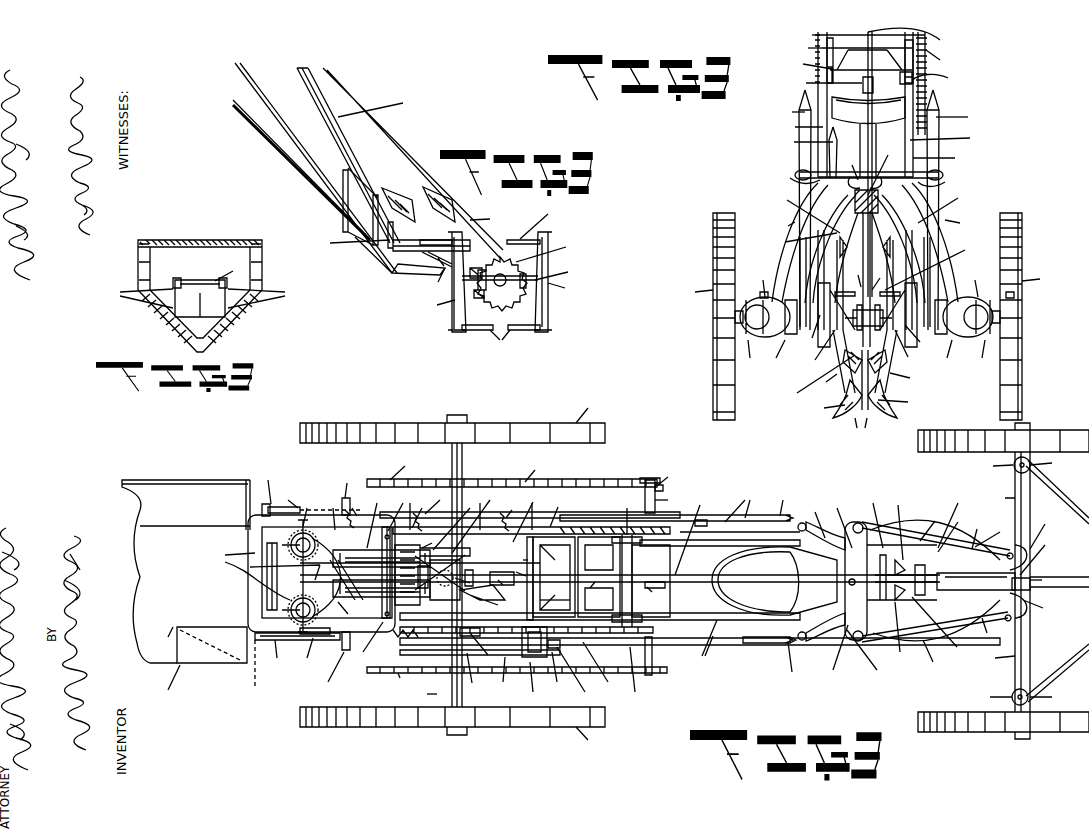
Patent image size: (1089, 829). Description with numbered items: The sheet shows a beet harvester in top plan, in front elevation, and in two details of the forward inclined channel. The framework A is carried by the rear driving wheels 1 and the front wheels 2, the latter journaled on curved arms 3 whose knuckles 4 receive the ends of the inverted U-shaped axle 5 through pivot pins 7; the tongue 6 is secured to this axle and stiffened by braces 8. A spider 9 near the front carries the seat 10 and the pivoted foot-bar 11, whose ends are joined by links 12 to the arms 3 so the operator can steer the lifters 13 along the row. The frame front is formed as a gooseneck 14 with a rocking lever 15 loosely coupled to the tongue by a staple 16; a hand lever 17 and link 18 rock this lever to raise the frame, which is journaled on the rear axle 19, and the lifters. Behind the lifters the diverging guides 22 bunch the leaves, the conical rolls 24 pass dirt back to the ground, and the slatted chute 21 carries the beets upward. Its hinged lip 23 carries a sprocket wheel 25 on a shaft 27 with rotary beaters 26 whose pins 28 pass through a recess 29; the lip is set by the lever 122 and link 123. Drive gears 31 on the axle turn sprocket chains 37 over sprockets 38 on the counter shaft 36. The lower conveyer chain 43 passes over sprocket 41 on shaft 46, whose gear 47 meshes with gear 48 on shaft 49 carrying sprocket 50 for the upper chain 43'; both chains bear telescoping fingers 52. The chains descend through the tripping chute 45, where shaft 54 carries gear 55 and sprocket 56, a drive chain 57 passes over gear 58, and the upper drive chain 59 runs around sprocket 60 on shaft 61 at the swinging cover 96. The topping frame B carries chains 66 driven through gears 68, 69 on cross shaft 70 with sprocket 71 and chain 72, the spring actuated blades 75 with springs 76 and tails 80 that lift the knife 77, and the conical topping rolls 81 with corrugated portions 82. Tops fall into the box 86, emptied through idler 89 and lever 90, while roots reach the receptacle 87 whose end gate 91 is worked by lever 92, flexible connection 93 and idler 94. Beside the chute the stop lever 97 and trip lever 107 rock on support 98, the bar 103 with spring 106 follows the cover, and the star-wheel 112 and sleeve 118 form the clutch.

In FIG. 2, the rear driving wheels 1 is at (452, 574).
In FIG. 3, the front wheels 2 is at (866, 316).
In FIG. 3, the curved arms 3 is at (874, 242).
In FIG. 2, the curved arms 3 is at (1006, 582).
In FIG. 3, the knuckle 4 is at (867, 335).
In FIG. 2, the knuckle 4 is at (1004, 581).
In FIG. 3, the inverted U-shaped axle 5 is at (889, 245).
In FIG. 2, the inverted U-shaped axle 5 is at (1059, 579).
In FIG. 3, the tongue 6 is at (875, 177).
In FIG. 3, the pivot pins 7 is at (886, 281).
In FIG. 2, the pivot pins 7 is at (1057, 579).
In FIG. 3, the braces 8 is at (866, 333).
In FIG. 3, the spider 9 is at (834, 246).
In FIG. 2, the spider 9 is at (821, 524).
In FIG. 3, the seat 10 is at (868, 137).
In FIG. 2, the seat 10 is at (774, 581).
In FIG. 3, the foot-bar 11 is at (861, 168).
In FIG. 2, the foot-bar 11 is at (848, 568).
In FIG. 3, the links 12 is at (868, 178).
In FIG. 2, the links 12 is at (937, 581).
In FIG. 3, the lifters 13 is at (860, 398).
In FIG. 2, the gooseneck 14 is at (991, 533).
In FIG. 2, the rocking lever 15 is at (976, 581).
In FIG. 2, the staple 16 is at (1036, 562).
In FIG. 3, the hand lever 17 is at (805, 152).
In FIG. 2, the hand lever 17 is at (841, 647).
In FIG. 2, the link 18 is at (952, 531).
In FIG. 2, the rear axle 19 is at (428, 694).
In FIG. 5, the chute 21 is at (200, 296).
In FIG. 4, the chute 21 is at (348, 155).
In FIG. 3, the chute 21 is at (847, 280).
In FIG. 2, the chute 21 is at (651, 581).
In FIG. 3, the diverging guides 22 is at (869, 361).
In FIG. 2, the diverging guides 22 is at (1036, 565).
In FIG. 4, the lip 23 is at (416, 163).
In FIG. 3, the lip 23 is at (876, 280).
In FIG. 2, the lip 23 is at (905, 569).
In FIG. 3, the conical rolls 24 is at (867, 399).
In FIG. 4, the sprocket wheel 25 is at (531, 273).
In FIG. 3, the sprocket wheel 25 is at (835, 353).
In FIG. 2, the sprocket wheel 25 is at (938, 628).
In FIG. 4, the rotary beaters 26 is at (502, 282).
In FIG. 3, the rotary beaters 26 is at (861, 327).
In FIG. 2, the rotary beaters 26 is at (935, 591).
In FIG. 4, the shaft 27 is at (525, 280).
In FIG. 2, the shaft 27 is at (952, 519).
In FIG. 4, the pins 28 is at (494, 279).
In FIG. 3, the pins 28 is at (910, 267).
In FIG. 2, the pins 28 is at (901, 545).
In FIG. 4, the recess 29 is at (437, 273).
In FIG. 2, the recess 29 is at (899, 578).
In FIG. 2, the drive gears 31 is at (512, 469).
In FIG. 2, the counter shaft 36 is at (663, 576).
In FIG. 2, the sprocket chains 37 is at (535, 469).
In FIG. 2, the sprockets 38 is at (666, 477).
In FIG. 2, the sprocket 41 is at (593, 592).
In FIG. 5, the conveyer chain 43 is at (200, 297).
In FIG. 5, the conveyer chain 43' is at (233, 271).
In FIG. 3, the conveyer chain 43' is at (851, 276).
In FIG. 2, the conveyer chain 43' is at (696, 533).
In FIG. 2, the tripping chute 45 is at (555, 594).
In FIG. 2, the shaft 46 is at (554, 577).
In FIG. 3, the gear 47 is at (957, 210).
In FIG. 2, the gear 47 is at (690, 574).
In FIG. 3, the gear 48 is at (938, 83).
In FIG. 2, the gear 48 is at (627, 561).
In FIG. 3, the shaft 49 is at (934, 77).
In FIG. 2, the shaft 49 is at (599, 577).
In FIG. 3, the sprocket 50 is at (830, 164).
In FIG. 2, the sprocket 50 is at (654, 593).
In FIG. 5, the fingers 52 is at (203, 297).
In FIG. 3, the shaft 54 is at (914, 37).
In FIG. 2, the shaft 54 is at (522, 578).
In FIG. 3, the gear 55 is at (850, 55).
In FIG. 2, the gear 55 is at (575, 675).
In FIG. 3, the sprocket 56 is at (807, 54).
In FIG. 2, the sprocket 56 is at (515, 568).
In FIG. 2, the drive chain 57 is at (599, 668).
In FIG. 3, the gear 58 is at (848, 60).
In FIG. 2, the gear 58 is at (635, 676).
In FIG. 2, the upper drive chain 59 is at (421, 526).
In FIG. 2, the sprocket 60 is at (458, 582).
In FIG. 2, the shaft 61 is at (476, 520).
In FIG. 2, the chains 66 is at (337, 559).
In FIG. 2, the gears 68 is at (299, 573).
In FIG. 2, the gears 69 is at (303, 563).
In FIG. 2, the cross shaft 70 is at (275, 569).
In FIG. 2, the sprocket 71 is at (314, 649).
In FIG. 2, the chain 72 is at (373, 595).
In FIG. 2, the spring actuated blades 75 is at (420, 511).
In FIG. 2, the springs 76 is at (433, 509).
In FIG. 2, the knife 77 is at (283, 576).
In FIG. 2, the tails 80 is at (337, 582).
In FIG. 2, the conical topping rolls 81 is at (381, 543).
In FIG. 2, the corrugated portions 82 is at (475, 553).
In FIG. 2, the box 86 is at (319, 498).
In FIG. 2, the receptacle 87 is at (186, 571).
In FIG. 2, the idler 89 is at (279, 491).
In FIG. 3, the lever 90 is at (896, 104).
In FIG. 2, the lever 90 is at (783, 501).
In FIG. 2, the end gate 91 is at (204, 664).
In FIG. 3, the lever 92 is at (791, 210).
In FIG. 2, the lever 92 is at (771, 661).
In FIG. 2, the flexible connection 93 is at (297, 651).
In FIG. 2, the idler 94 is at (255, 668).
In FIG. 2, the cover 96 is at (620, 584).
In FIG. 2, the stop lever 97 is at (472, 674).
In FIG. 2, the support 98 is at (478, 647).
In FIG. 2, the bar 103 is at (517, 679).
In FIG. 2, the spring 106 is at (434, 567).
In FIG. 2, the trip lever 107 is at (503, 675).
In FIG. 2, the star-wheel 112 is at (534, 665).
In FIG. 2, the sleeve 118 is at (557, 667).
In FIG. 4, the lever 122 is at (328, 168).
In FIG. 2, the lever 122 is at (834, 653).
In FIG. 4, the link 123 is at (389, 221).
In FIG. 3, the framework A is at (883, 235).
In FIG. 2, the framework A is at (680, 578).
In FIG. 2, the frame B is at (397, 510).